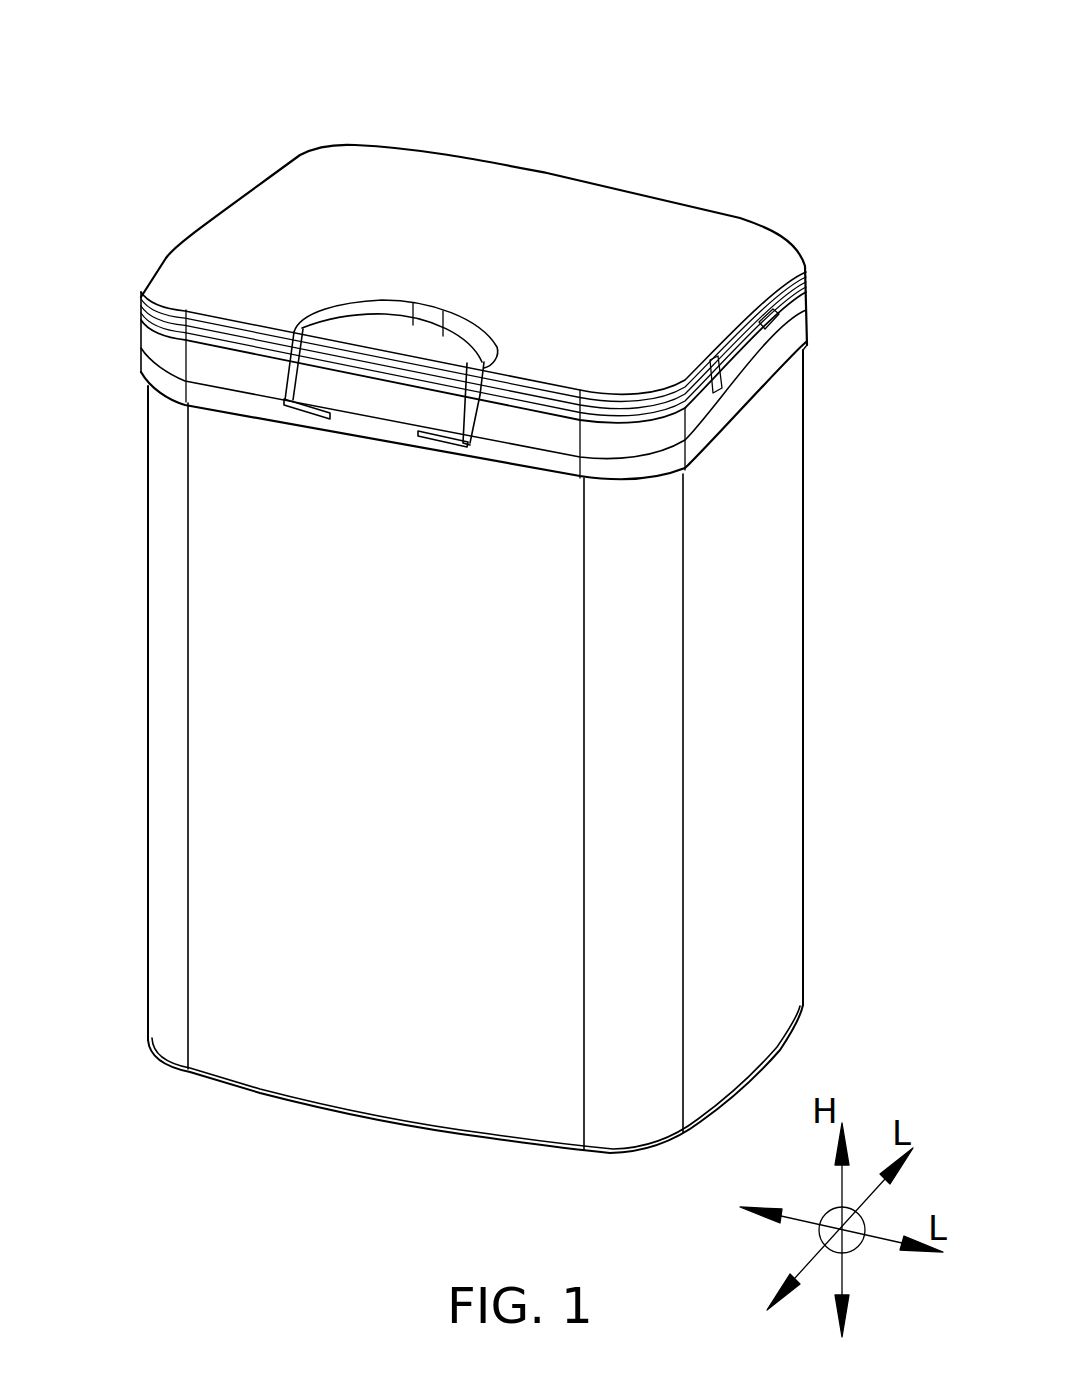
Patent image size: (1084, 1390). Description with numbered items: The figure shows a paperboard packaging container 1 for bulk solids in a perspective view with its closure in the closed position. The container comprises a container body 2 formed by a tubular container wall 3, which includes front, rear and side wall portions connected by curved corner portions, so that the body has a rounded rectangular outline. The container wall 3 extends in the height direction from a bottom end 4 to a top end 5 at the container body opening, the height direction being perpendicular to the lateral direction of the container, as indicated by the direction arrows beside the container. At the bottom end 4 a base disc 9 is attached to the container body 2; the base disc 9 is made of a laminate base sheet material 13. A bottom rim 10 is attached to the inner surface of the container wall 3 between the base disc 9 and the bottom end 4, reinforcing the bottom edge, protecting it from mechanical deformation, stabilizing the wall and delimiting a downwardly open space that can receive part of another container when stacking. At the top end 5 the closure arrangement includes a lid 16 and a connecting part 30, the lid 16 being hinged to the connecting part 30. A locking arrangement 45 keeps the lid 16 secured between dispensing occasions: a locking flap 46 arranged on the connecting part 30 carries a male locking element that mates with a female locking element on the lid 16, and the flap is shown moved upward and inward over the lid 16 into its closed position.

The paperboard packaging container 1 is at (666, 73).
The container body 2 is at (753, 620).
The container wall 3 is at (753, 620).
The bottom end 4 is at (749, 1087).
The top end 5 is at (524, 158).
The base disc 9 is at (328, 1125).
The bottom rim 10 is at (648, 1148).
The base sheet material 13 is at (468, 1150).
The lid 16 is at (628, 245).
The connecting part 30 is at (797, 342).
The locking arrangement 45 is at (382, 383).
The locking flap 46 is at (382, 383).